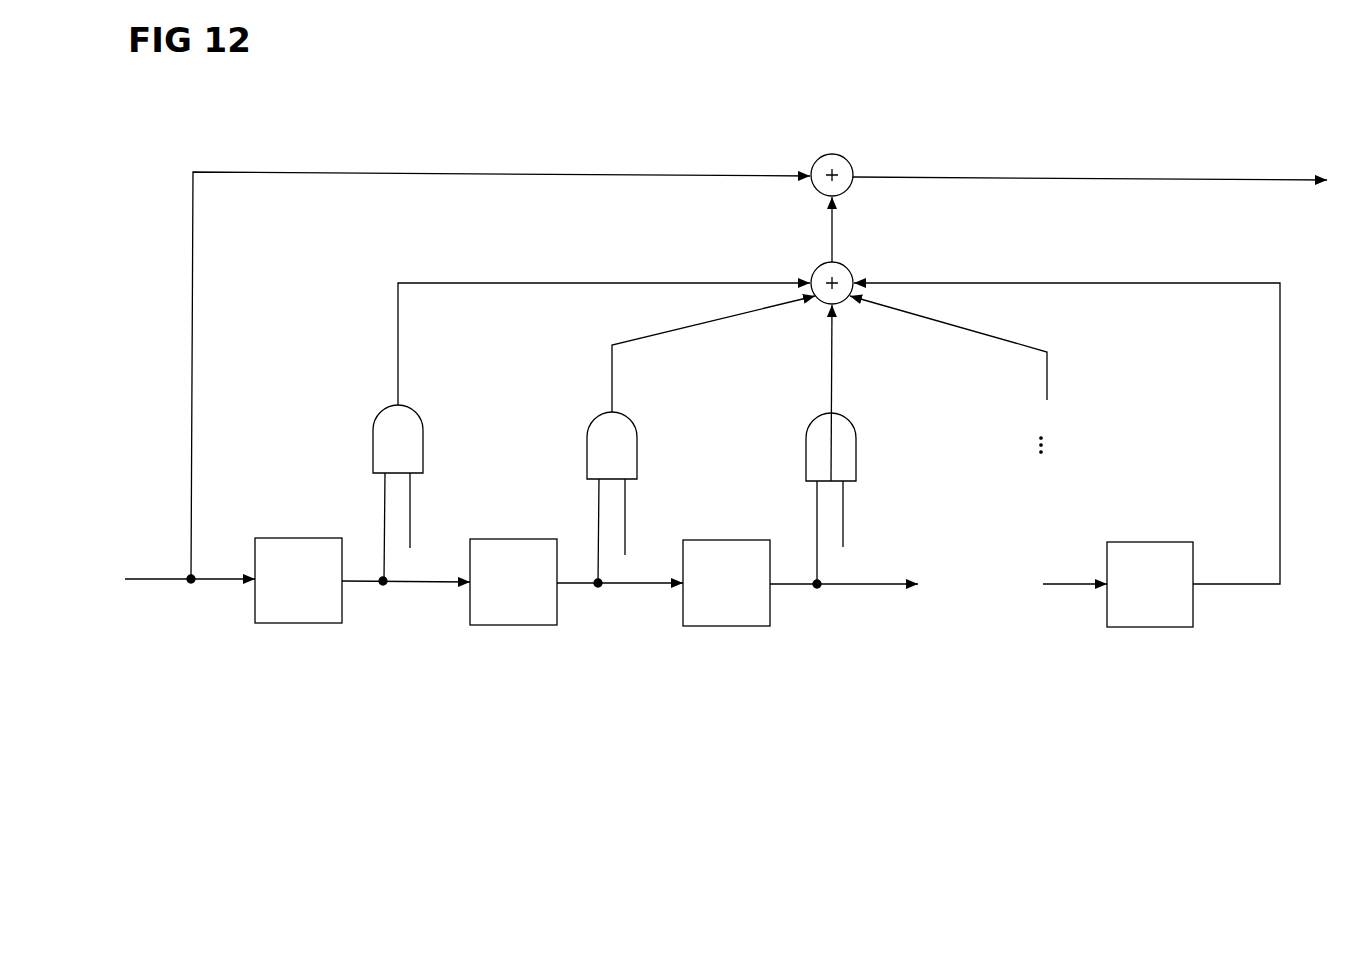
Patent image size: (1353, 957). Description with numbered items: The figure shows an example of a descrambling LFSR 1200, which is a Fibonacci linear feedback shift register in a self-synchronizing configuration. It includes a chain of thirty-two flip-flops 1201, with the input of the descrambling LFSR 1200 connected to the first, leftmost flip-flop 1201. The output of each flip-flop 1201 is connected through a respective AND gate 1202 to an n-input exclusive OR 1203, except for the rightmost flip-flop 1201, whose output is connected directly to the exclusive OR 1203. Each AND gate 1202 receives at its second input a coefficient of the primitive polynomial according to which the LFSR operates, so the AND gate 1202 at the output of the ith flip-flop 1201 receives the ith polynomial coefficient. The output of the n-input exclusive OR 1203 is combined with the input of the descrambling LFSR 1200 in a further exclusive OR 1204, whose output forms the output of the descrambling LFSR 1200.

The descrambling LFSR 1200 is at (1177, 85).
The flip-flop 1201 is at (300, 538).
The AND gate 1202 is at (410, 404).
The n-input exclusive OR 1203 is at (845, 262).
The exclusive OR 1204 is at (840, 155).